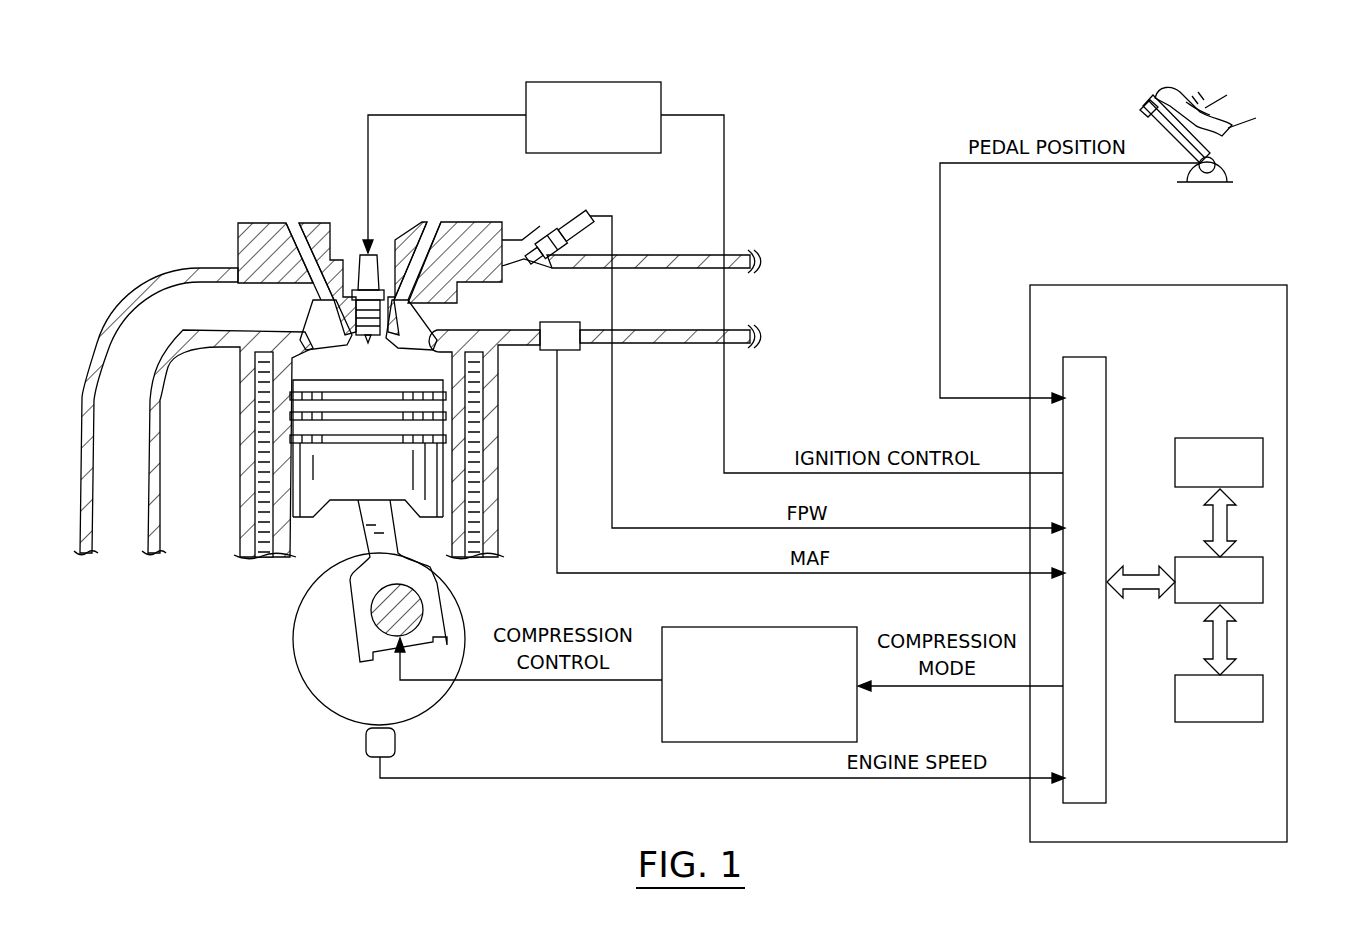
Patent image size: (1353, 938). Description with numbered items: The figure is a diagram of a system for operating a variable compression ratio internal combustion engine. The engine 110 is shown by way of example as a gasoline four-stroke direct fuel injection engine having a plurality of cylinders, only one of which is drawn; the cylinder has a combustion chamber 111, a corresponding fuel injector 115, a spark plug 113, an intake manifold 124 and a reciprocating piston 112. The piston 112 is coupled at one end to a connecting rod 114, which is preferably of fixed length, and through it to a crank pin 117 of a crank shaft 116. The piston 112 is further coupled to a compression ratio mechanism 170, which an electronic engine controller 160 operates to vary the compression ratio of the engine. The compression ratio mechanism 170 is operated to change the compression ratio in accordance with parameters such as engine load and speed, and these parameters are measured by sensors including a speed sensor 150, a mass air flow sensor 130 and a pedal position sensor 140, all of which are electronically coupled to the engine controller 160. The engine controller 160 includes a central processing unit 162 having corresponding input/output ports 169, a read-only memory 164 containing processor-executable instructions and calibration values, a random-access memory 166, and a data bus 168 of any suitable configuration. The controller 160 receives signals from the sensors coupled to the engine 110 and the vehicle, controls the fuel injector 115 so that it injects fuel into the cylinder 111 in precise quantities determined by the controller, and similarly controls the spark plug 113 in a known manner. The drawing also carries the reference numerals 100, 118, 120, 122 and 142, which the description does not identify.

The engine system 100 is at (724, 52).
The engine 110 is at (133, 589).
The combustion chamber 111 is at (435, 537).
The reciprocating piston 112 is at (442, 452).
The spark plug 113 is at (397, 250).
The connecting rod 114 is at (360, 543).
The fuel injector 115 is at (562, 222).
The crank shaft 116 is at (300, 675).
The crank pin 117 is at (417, 610).
The intake valve 118 is at (300, 225).
The exhaust valve 120 is at (460, 222).
The intake manifold / ignition system 122 is at (132, 325).
The intake manifold 124 is at (620, 278).
The mass air flow (MAF) sensor 130 is at (555, 320).
The pedal position sensor 140 is at (1148, 118).
The driver foot 142 is at (1185, 98).
The speed sensor 150 is at (365, 740).
The electronic engine controller 160 is at (1277, 285).
The central processing unit (CPU) 162 is at (1265, 582).
The read-only memory (ROM) 164 is at (1229, 438).
The random-access memory (RAM) 166 is at (1265, 697).
The data bus 168 is at (1213, 527).
The input/output ports 169 is at (1108, 400).
The compression ratio mechanism 170 is at (753, 627).